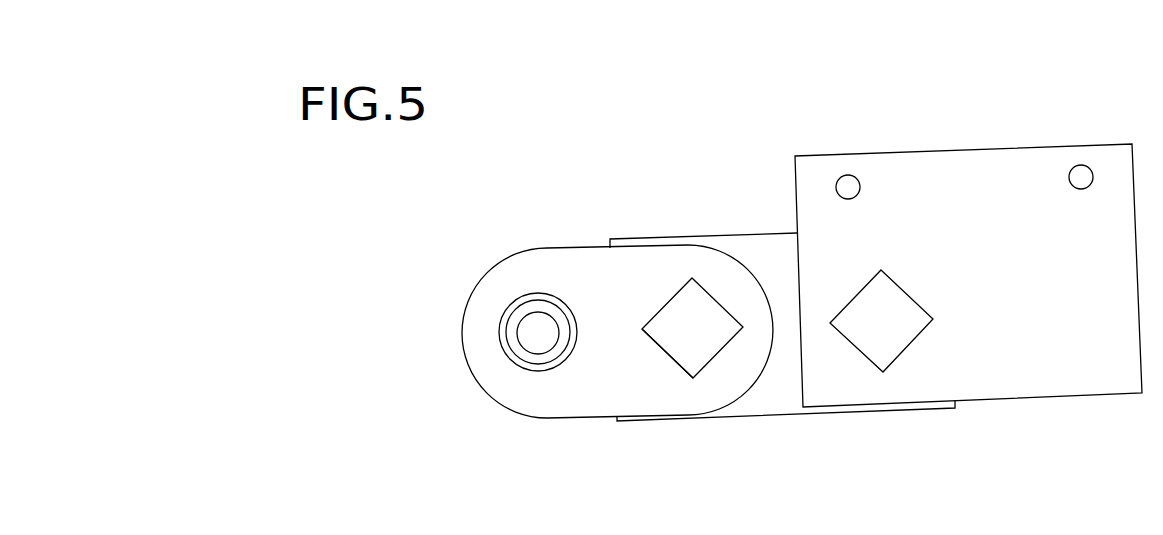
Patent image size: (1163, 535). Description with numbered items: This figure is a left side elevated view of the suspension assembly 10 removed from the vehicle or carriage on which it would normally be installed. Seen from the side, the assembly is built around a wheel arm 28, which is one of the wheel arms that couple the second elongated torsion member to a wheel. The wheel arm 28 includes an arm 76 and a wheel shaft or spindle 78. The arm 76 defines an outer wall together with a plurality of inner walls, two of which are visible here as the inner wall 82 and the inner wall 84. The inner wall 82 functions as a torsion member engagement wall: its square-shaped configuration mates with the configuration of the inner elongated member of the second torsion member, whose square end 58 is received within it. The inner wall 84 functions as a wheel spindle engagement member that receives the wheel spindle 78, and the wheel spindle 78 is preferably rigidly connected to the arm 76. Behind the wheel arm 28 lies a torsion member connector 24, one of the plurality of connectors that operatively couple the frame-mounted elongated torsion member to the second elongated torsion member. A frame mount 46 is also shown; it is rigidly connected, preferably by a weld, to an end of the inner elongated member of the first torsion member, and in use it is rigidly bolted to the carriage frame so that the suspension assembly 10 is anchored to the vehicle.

The suspension assembly 10 is at (673, 118).
The torsion member connector 24 is at (787, 428).
The wheel arm 28 is at (478, 248).
The frame mount 46 is at (1029, 138).
The end of inner elongated member 58 is at (693, 320).
The arm 76 is at (570, 248).
The wheel spindle 78 is at (530, 332).
The inner wall 82 is at (672, 358).
The inner wall 84 is at (523, 368).